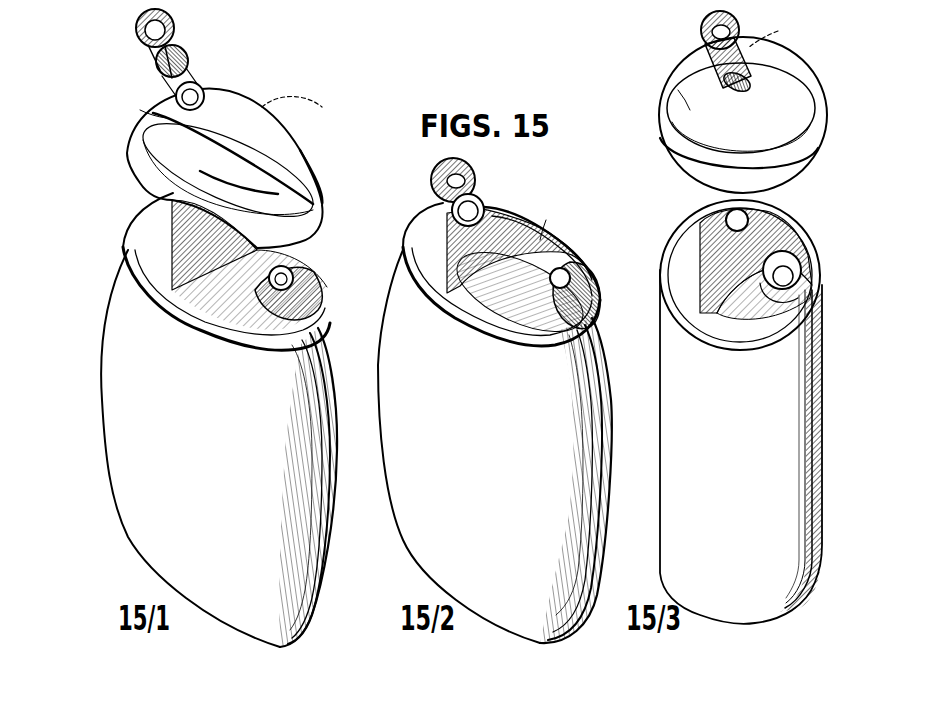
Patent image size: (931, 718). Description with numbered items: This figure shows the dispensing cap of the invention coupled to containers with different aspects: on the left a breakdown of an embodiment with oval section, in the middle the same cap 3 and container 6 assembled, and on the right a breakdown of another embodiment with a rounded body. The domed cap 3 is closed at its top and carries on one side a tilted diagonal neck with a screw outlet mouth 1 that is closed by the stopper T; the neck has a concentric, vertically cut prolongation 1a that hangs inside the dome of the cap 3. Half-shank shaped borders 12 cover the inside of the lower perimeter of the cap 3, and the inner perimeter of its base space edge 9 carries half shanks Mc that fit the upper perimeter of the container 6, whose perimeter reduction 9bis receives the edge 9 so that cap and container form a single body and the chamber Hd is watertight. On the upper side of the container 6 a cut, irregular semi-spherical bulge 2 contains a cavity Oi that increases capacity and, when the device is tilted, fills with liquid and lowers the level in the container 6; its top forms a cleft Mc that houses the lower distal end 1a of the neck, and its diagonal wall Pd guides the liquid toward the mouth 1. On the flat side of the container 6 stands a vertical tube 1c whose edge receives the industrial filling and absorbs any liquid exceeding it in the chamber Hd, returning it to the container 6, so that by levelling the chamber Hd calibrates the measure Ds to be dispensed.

The screw outlet mouth 1 is at (150, 70).
The neck prolongation 1a is at (140, 110).
The tube 1c is at (784, 252).
The bulge 2 is at (412, 233).
The cap 3 is at (418, 224).
The container 6 is at (416, 426).
The base space edge 9 is at (340, 247).
The perimeter reduction 9bis is at (682, 335).
The borders 12 is at (158, 143).
The cleft Mc is at (228, 200).
The cavity Oi is at (152, 232).
The chamber Hd is at (188, 235).
The diagonal wall Pd is at (231, 277).
The measure Ds is at (546, 220).
The stopper T is at (700, 25).